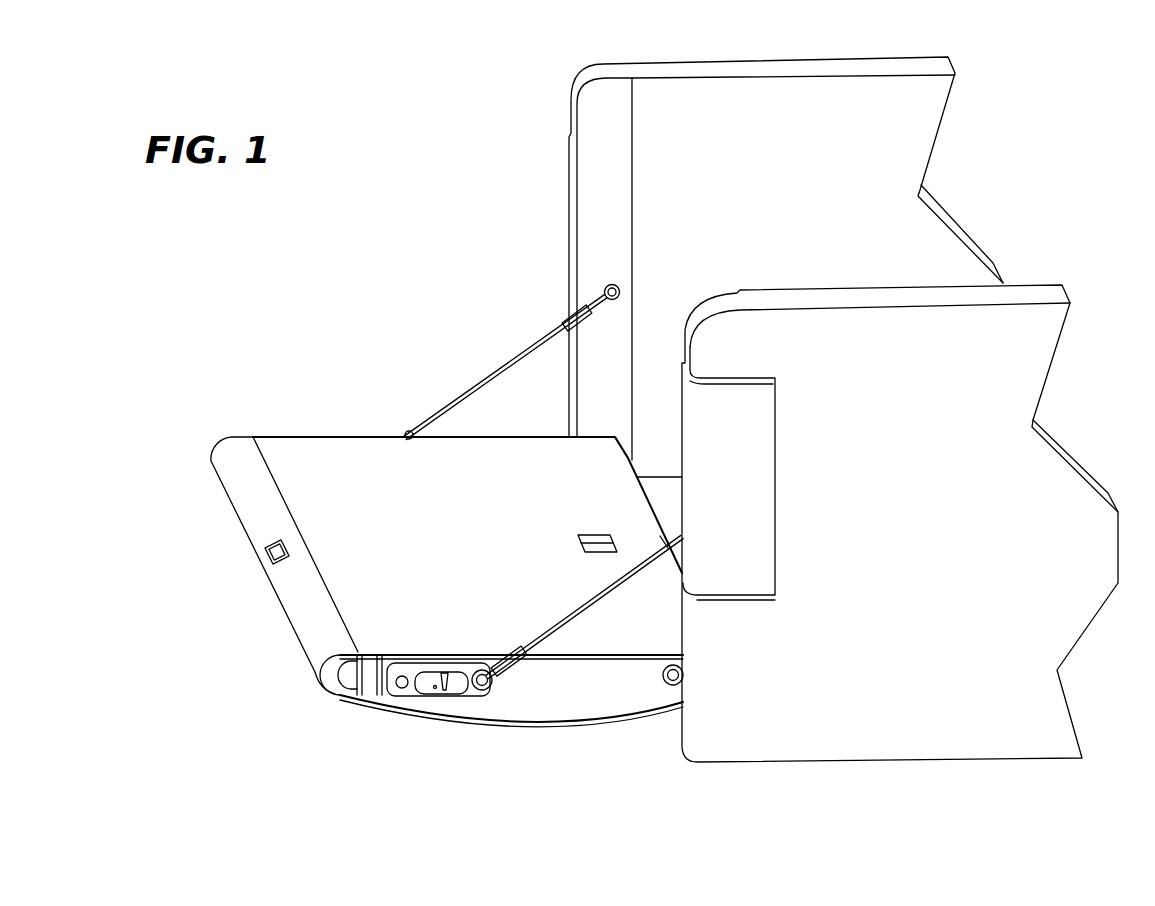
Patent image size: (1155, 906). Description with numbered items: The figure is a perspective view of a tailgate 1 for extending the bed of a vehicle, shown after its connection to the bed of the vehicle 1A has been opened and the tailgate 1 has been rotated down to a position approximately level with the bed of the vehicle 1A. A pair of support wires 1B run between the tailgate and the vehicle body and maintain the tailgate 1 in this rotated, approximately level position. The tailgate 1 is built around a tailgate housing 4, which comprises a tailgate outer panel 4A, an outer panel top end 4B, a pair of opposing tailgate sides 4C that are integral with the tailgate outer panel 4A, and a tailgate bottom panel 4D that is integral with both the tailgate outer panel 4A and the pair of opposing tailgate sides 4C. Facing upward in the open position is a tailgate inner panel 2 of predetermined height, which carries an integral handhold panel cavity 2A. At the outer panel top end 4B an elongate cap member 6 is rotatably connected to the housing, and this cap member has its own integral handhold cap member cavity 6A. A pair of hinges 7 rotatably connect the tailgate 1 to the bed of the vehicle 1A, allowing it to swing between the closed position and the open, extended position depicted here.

The tailgate 1 is at (352, 348).
The bed of the vehicle 1A is at (667, 492).
The support wires 1B is at (515, 362).
The tailgate inner panel 2 is at (350, 453).
The handhold panel cavity 2A is at (593, 536).
The tailgate housing 4 is at (485, 700).
The tailgate outer panel 4A is at (587, 722).
The outer panel top end 4B is at (373, 700).
The tailgate sides 4C is at (295, 440).
The tailgate bottom panel 4D is at (638, 492).
The elongate cap member 6 is at (297, 618).
The handhold cap member cavity 6A is at (265, 555).
The hinges 7 is at (627, 455).